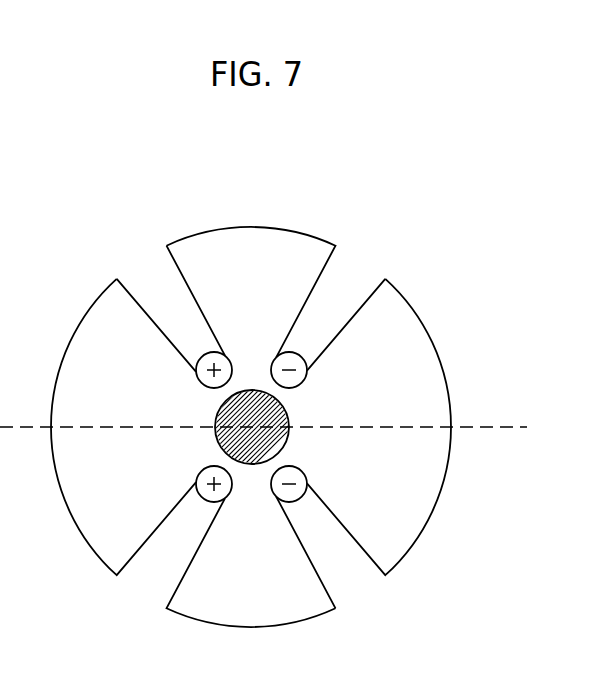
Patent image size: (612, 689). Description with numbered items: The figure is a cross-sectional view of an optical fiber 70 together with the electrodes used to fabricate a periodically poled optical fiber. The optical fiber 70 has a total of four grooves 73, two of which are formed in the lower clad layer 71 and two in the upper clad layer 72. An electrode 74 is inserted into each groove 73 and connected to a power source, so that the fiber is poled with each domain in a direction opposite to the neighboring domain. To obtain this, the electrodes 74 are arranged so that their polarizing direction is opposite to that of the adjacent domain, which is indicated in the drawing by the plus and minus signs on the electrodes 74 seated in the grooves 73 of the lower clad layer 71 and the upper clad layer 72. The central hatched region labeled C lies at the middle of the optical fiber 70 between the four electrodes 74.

The optical fiber 70 is at (428, 256).
The lower clad layer 71 is at (425, 509).
The upper clad layer 72 is at (272, 248).
The groove 73 is at (144, 265).
The electrode 74 is at (294, 351).
The center C is at (284, 435).